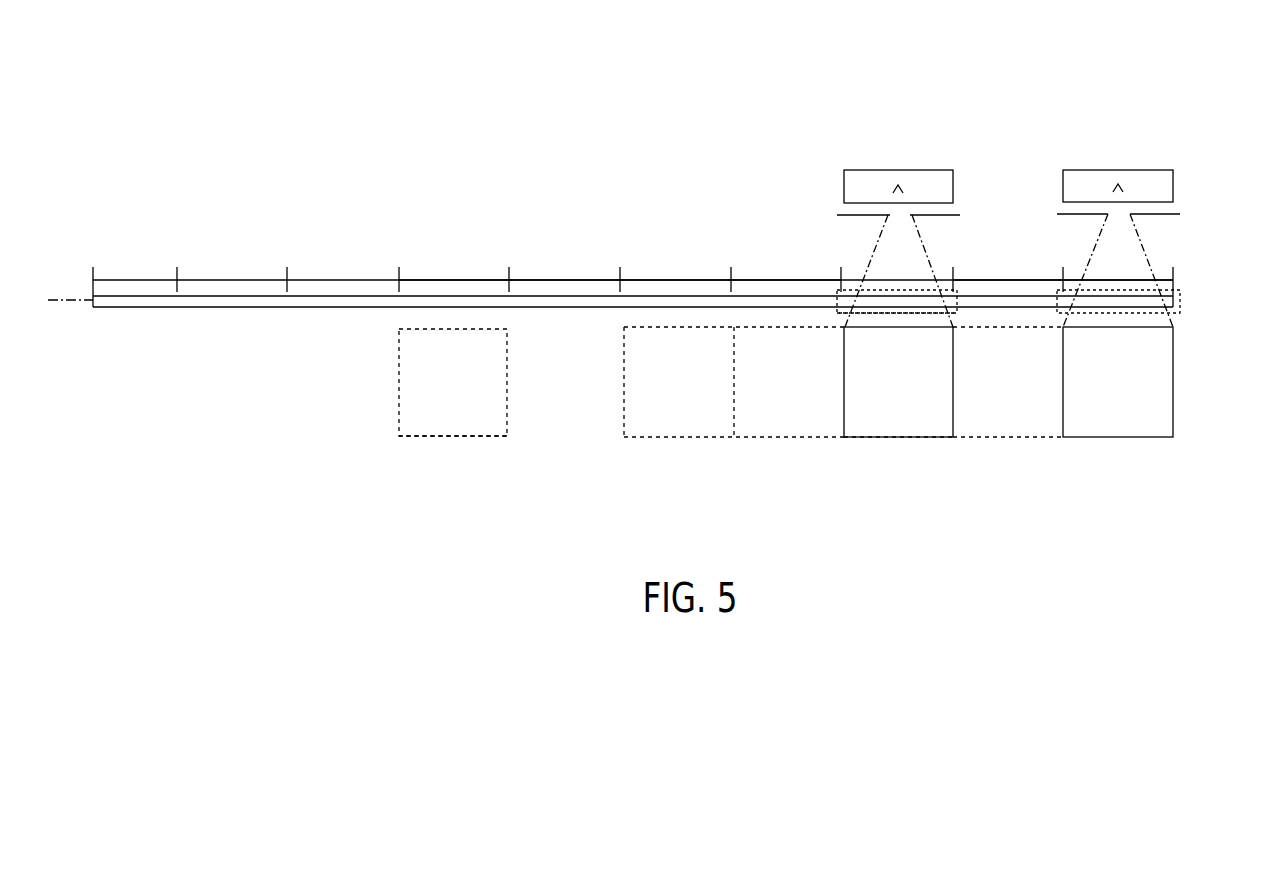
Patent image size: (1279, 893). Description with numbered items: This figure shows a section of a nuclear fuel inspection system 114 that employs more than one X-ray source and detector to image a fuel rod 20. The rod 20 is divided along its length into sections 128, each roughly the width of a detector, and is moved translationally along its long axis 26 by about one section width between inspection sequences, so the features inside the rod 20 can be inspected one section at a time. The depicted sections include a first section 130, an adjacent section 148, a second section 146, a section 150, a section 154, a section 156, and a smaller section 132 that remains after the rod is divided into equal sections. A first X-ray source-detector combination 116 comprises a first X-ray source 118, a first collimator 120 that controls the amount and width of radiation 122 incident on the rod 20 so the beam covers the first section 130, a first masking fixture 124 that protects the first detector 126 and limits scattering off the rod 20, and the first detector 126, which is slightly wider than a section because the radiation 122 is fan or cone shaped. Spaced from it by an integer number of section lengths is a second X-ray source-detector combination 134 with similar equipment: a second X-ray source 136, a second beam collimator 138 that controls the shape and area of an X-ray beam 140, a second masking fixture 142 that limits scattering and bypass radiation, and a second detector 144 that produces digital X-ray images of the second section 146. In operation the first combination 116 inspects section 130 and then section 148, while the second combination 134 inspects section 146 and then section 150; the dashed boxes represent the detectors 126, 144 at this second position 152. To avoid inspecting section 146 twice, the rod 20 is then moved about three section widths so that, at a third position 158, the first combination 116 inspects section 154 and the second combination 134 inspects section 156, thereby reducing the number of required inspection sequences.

The system 114 is at (560, 60).
The rod 20 is at (237, 308).
The long axis 26 is at (72, 302).
The smaller section 132 is at (131, 268).
The section 156 is at (468, 278).
The sections 128 is at (548, 270).
The section 154 is at (683, 278).
The section 150 is at (767, 278).
The section 148 is at (997, 268).
The first section 130 is at (1158, 268).
The second section 146 is at (858, 270).
The first masking fixture 124 is at (1181, 302).
The second masking fixture 142 is at (845, 313).
The second X-ray source-detector combination 134 is at (878, 125).
The second X-ray source 136 is at (917, 170).
The X-ray beam 140 is at (858, 215).
The second beam collimator 138 is at (930, 215).
The first X-ray source-detector combination 116 is at (1118, 145).
The first X-ray source 118 is at (1147, 170).
The radiation 122 is at (1093, 243).
The first collimator 120 is at (1165, 215).
The second detector 144 is at (435, 440).
The third position 158 is at (490, 440).
The first detector 126 is at (624, 385).
The second position 152 is at (797, 440).